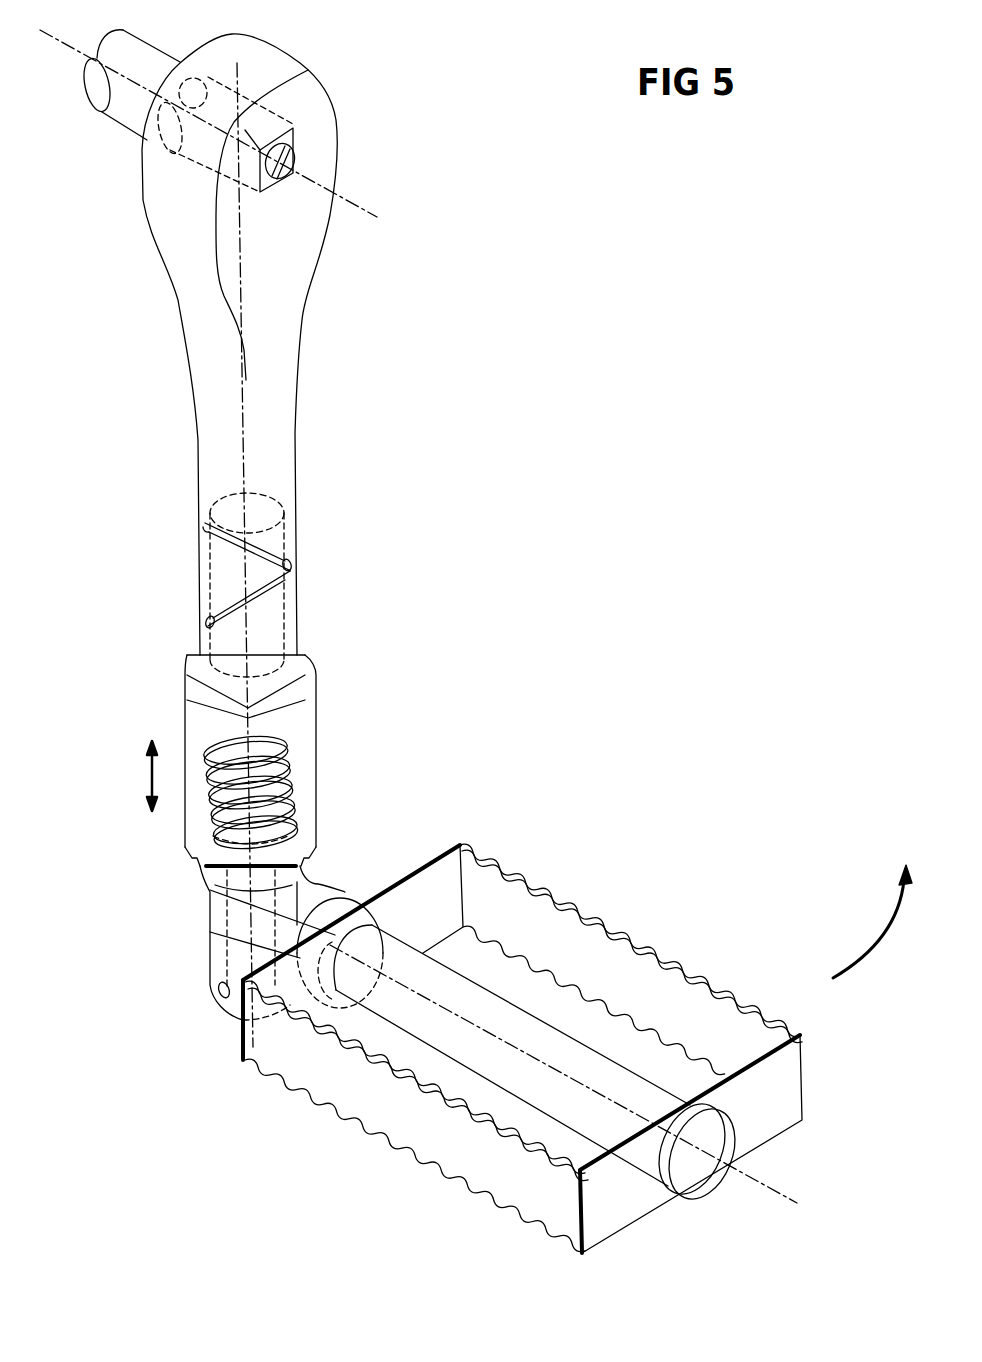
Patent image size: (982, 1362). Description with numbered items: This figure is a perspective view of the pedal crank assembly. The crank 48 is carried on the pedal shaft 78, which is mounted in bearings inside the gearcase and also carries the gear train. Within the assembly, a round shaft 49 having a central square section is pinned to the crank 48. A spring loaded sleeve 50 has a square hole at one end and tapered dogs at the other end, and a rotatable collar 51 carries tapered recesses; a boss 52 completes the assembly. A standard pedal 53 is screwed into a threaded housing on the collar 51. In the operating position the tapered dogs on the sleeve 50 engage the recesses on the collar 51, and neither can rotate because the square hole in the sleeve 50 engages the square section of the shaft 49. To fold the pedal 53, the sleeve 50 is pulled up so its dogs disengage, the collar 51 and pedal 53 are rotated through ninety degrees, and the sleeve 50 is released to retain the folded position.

The crank 48 is at (300, 468).
The round shaft 49 is at (277, 612).
The spring loaded sleeve 50 is at (318, 730).
The rotatable collar 51 is at (322, 872).
The boss 52 is at (207, 960).
The pedal 53 is at (563, 897).
The shaft 78 is at (297, 165).